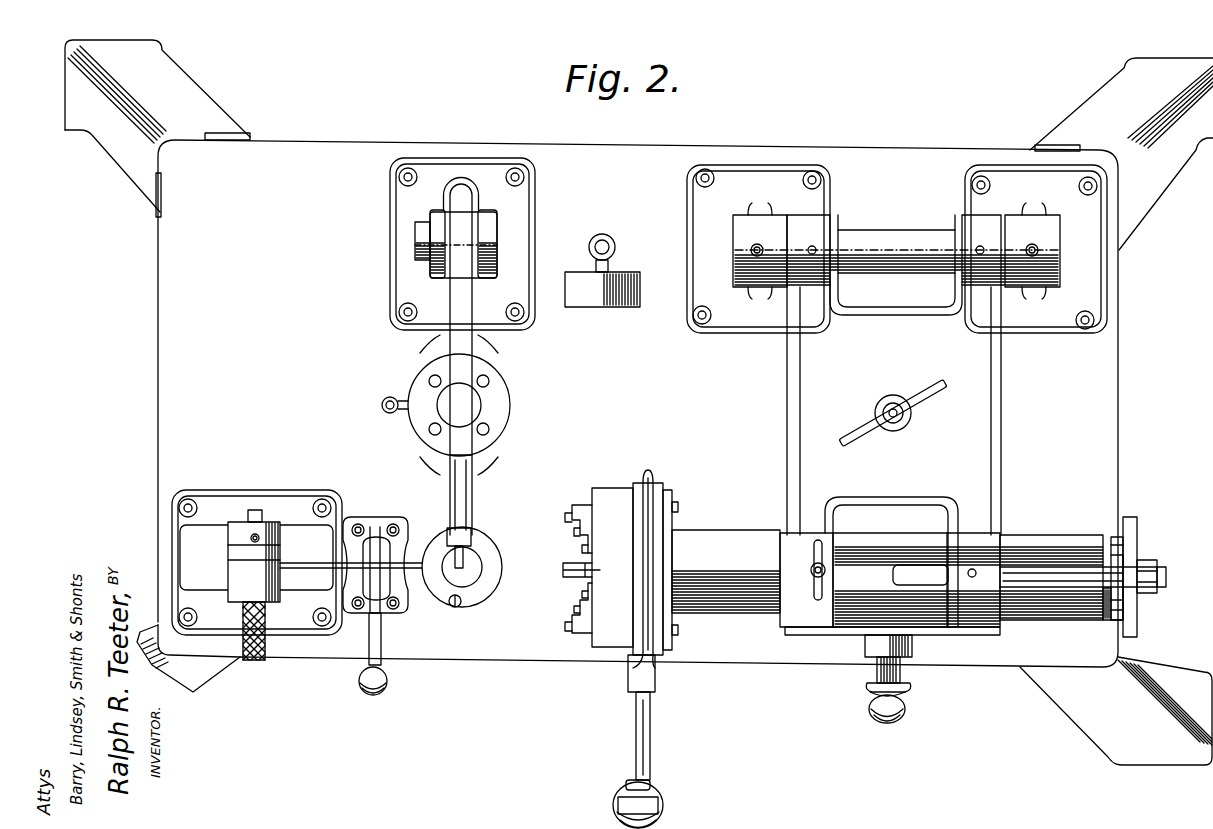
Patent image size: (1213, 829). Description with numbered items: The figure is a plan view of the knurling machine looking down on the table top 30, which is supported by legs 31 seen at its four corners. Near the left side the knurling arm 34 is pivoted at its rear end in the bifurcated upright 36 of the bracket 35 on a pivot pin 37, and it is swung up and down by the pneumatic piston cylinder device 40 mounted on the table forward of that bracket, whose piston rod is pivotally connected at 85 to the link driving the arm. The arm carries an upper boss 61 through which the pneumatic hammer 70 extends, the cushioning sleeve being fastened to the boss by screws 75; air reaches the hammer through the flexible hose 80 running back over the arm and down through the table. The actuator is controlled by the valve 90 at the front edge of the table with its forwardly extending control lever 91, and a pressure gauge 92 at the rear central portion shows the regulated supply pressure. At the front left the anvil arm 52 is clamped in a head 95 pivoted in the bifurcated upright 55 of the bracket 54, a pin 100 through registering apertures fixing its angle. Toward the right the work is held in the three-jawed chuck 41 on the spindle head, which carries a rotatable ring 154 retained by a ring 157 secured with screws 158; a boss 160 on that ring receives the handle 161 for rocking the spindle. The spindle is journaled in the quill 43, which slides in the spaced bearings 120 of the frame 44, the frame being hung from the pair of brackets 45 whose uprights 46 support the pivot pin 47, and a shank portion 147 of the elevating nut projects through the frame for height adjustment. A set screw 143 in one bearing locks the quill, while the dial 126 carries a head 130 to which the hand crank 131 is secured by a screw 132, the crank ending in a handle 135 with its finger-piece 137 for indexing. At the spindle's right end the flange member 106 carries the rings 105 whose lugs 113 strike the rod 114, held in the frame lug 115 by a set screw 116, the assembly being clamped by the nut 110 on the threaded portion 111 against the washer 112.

The top 30 is at (517, 648).
The legs 31 is at (113, 143).
The arm 34 is at (468, 502).
The bracket 35 is at (410, 288).
The bifurcated upright 36 is at (428, 268).
The pivot pin 37 is at (415, 238).
The pneumatic piston cylinder device 40 is at (497, 404).
The chuck 41 is at (602, 497).
The quill 43 is at (712, 537).
The frame 44 is at (993, 445).
The brackets 45 is at (733, 317).
The upright 46 is at (733, 272).
The pivot pin 47 is at (880, 238).
The arm 52 is at (308, 563).
The bracket 54 is at (218, 502).
The bifurcated upright 55 is at (240, 583).
The upper boss 61 is at (483, 577).
The hammer 70 is at (472, 565).
The screws 75 is at (455, 607).
The hose 80 is at (458, 492).
The pivotal connection 85 is at (442, 407).
The valve 90 is at (395, 585).
The control lever 91 is at (380, 694).
The pressure gauge 92 is at (593, 298).
The head 95 is at (235, 555).
The pin 100 is at (257, 660).
The rings 105 is at (1115, 612).
The flange member 106 is at (1117, 618).
The nut 110 is at (1150, 562).
The threaded portion 111 is at (1165, 577).
The washer 112 is at (1145, 558).
The lugs 113 is at (1127, 518).
The rod 114 is at (1063, 570).
The lug 115 is at (992, 562).
The set screw 116 is at (975, 570).
The bearings 120 is at (790, 613).
The dial 126 is at (943, 630).
The head 130 is at (865, 657).
The hand crank 131 is at (867, 640).
The screw 132 is at (880, 670).
The handle 135 is at (903, 722).
The finger-piece 137 is at (908, 680).
The set screw 143 is at (807, 570).
The shank portion 147 is at (900, 417).
The ring 154 is at (653, 490).
The ring 157 is at (672, 490).
The screws 158 is at (679, 630).
The boss 160 is at (657, 688).
The handle 161 is at (645, 743).